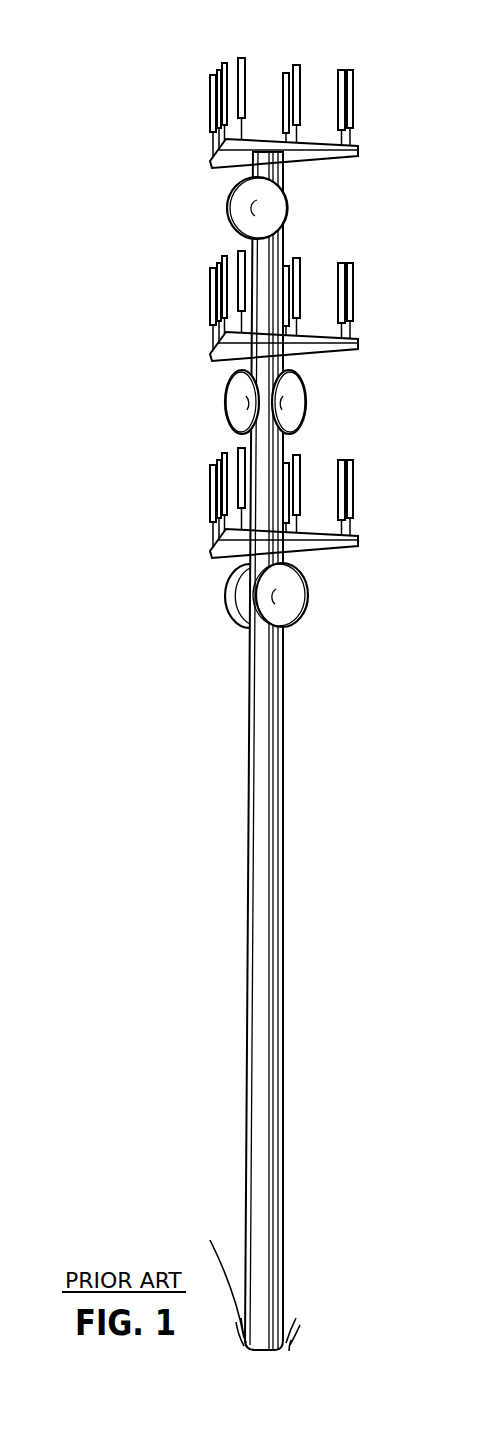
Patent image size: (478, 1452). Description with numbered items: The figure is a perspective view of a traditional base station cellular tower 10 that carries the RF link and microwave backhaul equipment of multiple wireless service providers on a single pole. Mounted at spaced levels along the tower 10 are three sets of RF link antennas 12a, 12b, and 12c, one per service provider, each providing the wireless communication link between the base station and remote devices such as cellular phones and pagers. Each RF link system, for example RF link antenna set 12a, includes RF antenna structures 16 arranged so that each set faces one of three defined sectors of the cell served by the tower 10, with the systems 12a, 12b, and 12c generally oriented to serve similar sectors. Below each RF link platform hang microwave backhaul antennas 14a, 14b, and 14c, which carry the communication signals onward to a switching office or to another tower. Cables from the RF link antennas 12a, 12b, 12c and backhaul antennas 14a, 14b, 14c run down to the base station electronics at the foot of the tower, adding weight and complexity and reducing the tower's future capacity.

The base station cellular tower 10 is at (126, 127).
The RF link antenna set 12a is at (380, 104).
The RF link antenna set 12b is at (381, 287).
The RF link antenna set 12c is at (381, 472).
The backhaul antenna 14a is at (210, 210).
The backhaul antenna set 14b is at (210, 410).
The backhaul antenna set 14c is at (206, 598).
The RF antenna structures 16 is at (297, 65).